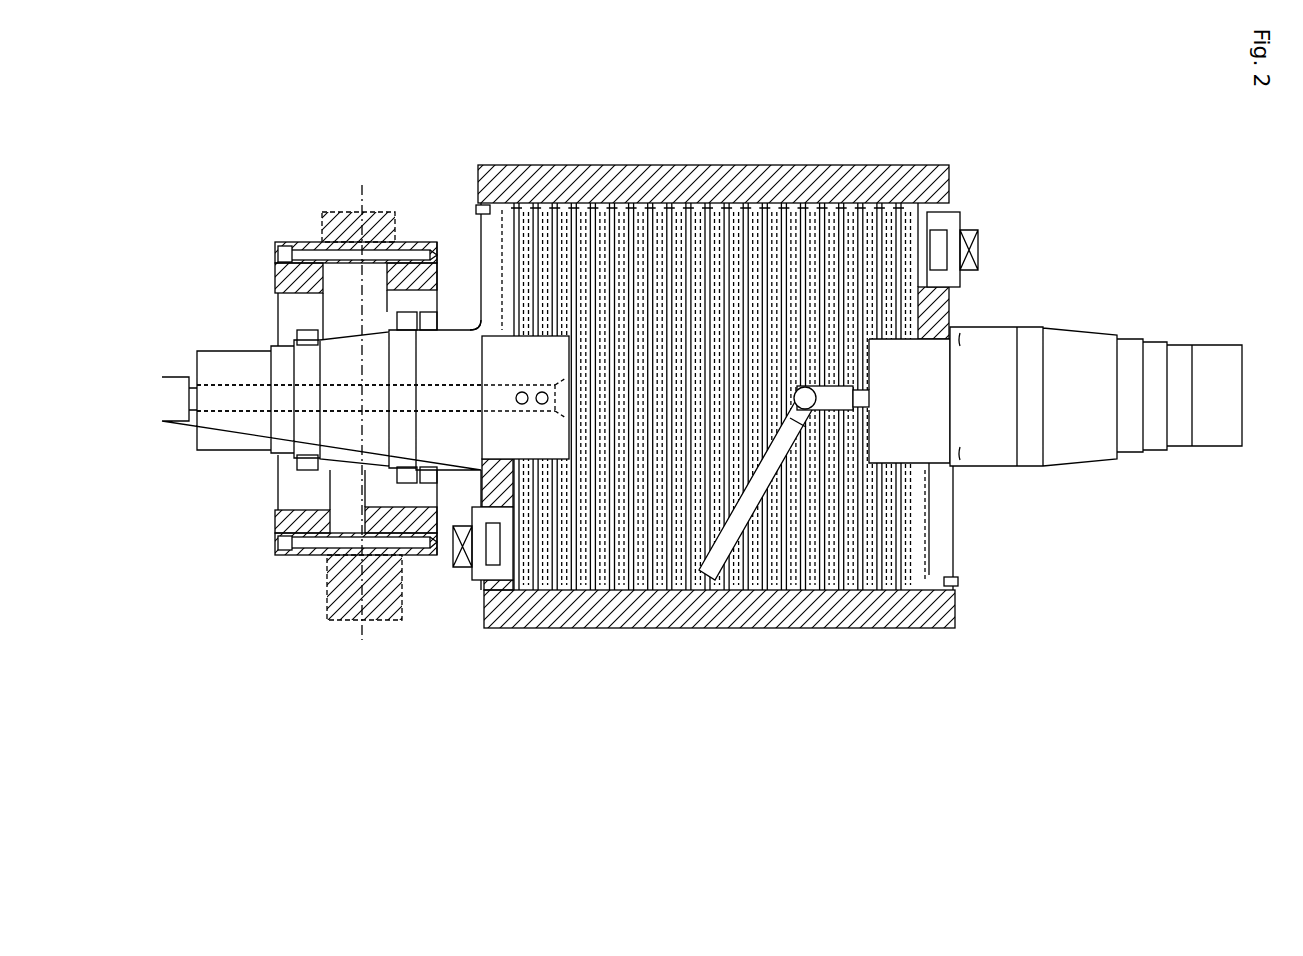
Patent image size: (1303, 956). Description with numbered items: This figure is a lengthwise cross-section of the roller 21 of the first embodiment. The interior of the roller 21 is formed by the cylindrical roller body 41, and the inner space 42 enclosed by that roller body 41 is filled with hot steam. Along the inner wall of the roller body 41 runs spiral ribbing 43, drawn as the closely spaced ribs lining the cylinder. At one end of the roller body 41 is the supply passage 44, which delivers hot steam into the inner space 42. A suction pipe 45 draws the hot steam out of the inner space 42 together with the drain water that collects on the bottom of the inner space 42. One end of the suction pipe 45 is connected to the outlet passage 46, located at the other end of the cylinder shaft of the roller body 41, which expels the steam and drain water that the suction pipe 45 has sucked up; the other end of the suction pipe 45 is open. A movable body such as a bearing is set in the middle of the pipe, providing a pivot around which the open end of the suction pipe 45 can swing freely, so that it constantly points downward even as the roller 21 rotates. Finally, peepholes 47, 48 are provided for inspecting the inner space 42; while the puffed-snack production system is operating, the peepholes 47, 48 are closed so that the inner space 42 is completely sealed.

The roller 21 is at (742, 153).
The roller body 41 is at (888, 166).
The inner space 42 is at (918, 550).
The spiral ribbing 43 is at (600, 206).
The supply passage 44 is at (226, 422).
The suction pipe 45 is at (710, 580).
The outlet passage 46 is at (1090, 382).
The peephole 47 is at (968, 232).
The peephole 48 is at (463, 582).